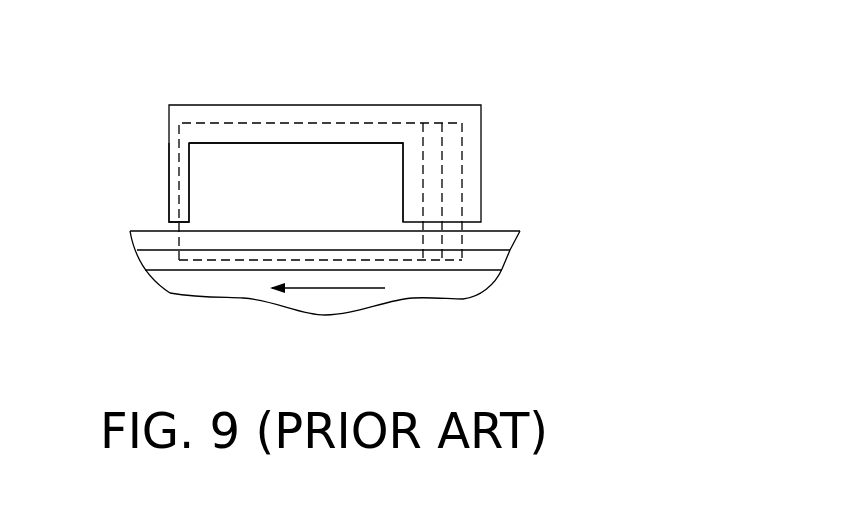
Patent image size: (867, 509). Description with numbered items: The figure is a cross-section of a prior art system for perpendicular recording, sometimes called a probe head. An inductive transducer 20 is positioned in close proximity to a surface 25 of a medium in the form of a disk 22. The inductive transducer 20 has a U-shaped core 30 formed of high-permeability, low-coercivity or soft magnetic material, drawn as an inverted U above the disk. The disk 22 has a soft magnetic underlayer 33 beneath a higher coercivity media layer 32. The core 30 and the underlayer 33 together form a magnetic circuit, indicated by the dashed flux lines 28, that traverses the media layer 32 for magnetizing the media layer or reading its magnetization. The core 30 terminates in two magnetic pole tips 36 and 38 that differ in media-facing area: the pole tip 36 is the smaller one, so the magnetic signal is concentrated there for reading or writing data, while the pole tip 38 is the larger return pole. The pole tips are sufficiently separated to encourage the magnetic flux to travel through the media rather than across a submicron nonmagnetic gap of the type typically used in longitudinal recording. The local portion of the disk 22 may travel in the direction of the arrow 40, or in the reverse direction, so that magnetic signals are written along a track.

The inductive transducer 20 is at (486, 71).
The disk 22 is at (527, 291).
The surface 25 is at (504, 224).
The flux lines 28 is at (260, 123).
The U-shaped core 30 is at (362, 104).
The media layer 32 is at (150, 243).
The soft magnetic underlayer 33 is at (432, 268).
The magnetic pole tip 36 is at (169, 222).
The magnetic pole tip 38 is at (403, 222).
The arrow 40 is at (323, 290).